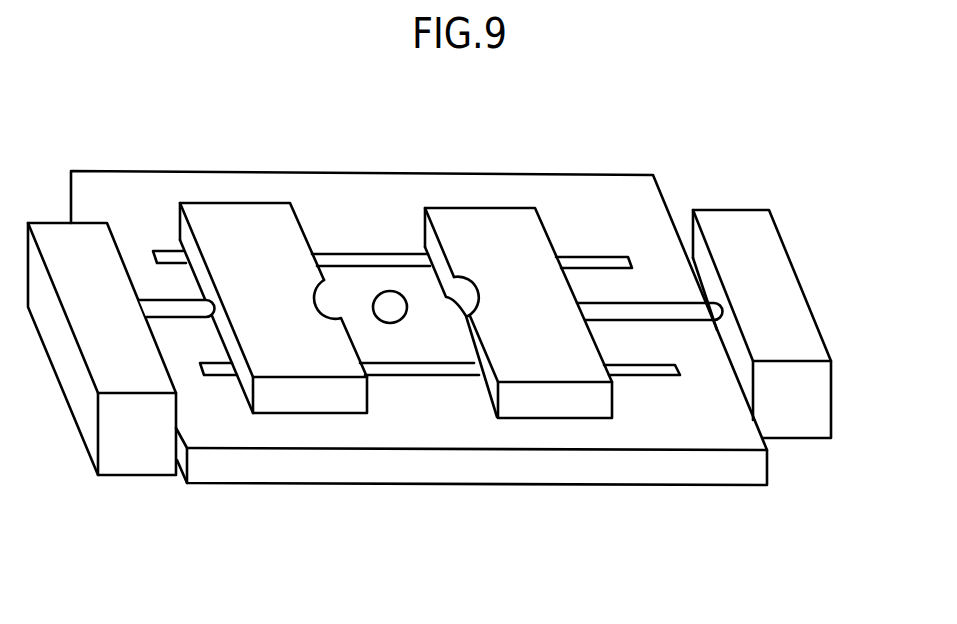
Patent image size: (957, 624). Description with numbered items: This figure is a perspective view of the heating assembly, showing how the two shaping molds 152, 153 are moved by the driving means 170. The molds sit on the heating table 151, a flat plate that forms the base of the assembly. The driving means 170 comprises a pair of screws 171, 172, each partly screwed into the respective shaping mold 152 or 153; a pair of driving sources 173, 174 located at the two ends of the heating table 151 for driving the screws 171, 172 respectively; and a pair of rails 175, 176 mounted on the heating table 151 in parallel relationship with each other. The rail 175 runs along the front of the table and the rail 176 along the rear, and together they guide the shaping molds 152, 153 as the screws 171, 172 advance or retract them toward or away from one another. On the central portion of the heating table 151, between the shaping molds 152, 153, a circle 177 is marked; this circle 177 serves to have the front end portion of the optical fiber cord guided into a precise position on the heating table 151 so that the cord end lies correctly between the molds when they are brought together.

The driving means 170 is at (772, 195).
The heating table 151 is at (472, 174).
The shaping mold 152 is at (327, 414).
The shaping mold 153 is at (580, 420).
The screw 171 is at (163, 307).
The screw 172 is at (700, 313).
The driving source 173 is at (128, 477).
The driving source 174 is at (832, 400).
The rail 175 is at (217, 376).
The rail 176 is at (630, 258).
The circle 177 is at (383, 290).